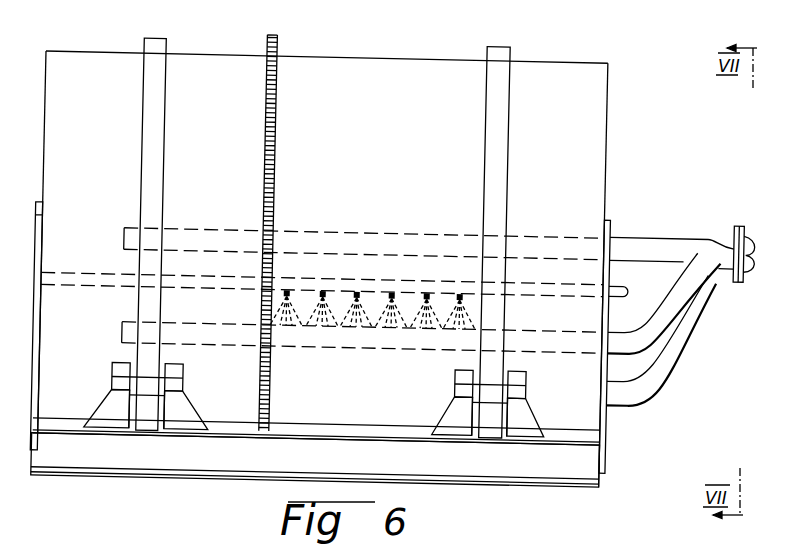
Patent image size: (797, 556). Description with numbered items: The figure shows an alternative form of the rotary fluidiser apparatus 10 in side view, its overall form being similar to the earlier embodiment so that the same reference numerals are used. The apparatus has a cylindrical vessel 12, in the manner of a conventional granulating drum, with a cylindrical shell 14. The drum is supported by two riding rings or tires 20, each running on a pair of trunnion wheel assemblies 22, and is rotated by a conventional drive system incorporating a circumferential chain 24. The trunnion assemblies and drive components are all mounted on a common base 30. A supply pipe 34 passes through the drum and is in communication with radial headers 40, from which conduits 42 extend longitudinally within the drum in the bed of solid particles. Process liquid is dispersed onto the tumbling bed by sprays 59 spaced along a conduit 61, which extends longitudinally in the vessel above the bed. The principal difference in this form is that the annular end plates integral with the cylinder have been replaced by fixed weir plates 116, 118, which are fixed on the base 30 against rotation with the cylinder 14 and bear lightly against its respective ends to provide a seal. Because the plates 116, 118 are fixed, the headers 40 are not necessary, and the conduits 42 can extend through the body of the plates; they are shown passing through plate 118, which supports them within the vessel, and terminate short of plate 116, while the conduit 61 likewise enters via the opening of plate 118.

The apparatus 10 is at (607, 107).
The cylindrical vessel 12 is at (45, 50).
The cylindrical shell 14 is at (377, 58).
The riding rings or tires 20 is at (154, 50).
The trunnion wheel assemblies 22 is at (148, 385).
The circumferential chain 24 is at (273, 33).
The base 30 is at (603, 477).
The supply pipe 34 is at (743, 282).
The radial headers 40 is at (722, 242).
The conduits 42 is at (246, 237).
The sprays 59 is at (323, 292).
The conduit 61 is at (572, 292).
The fixed weir plate 116 is at (35, 215).
The fixed weir plate 118 is at (613, 222).